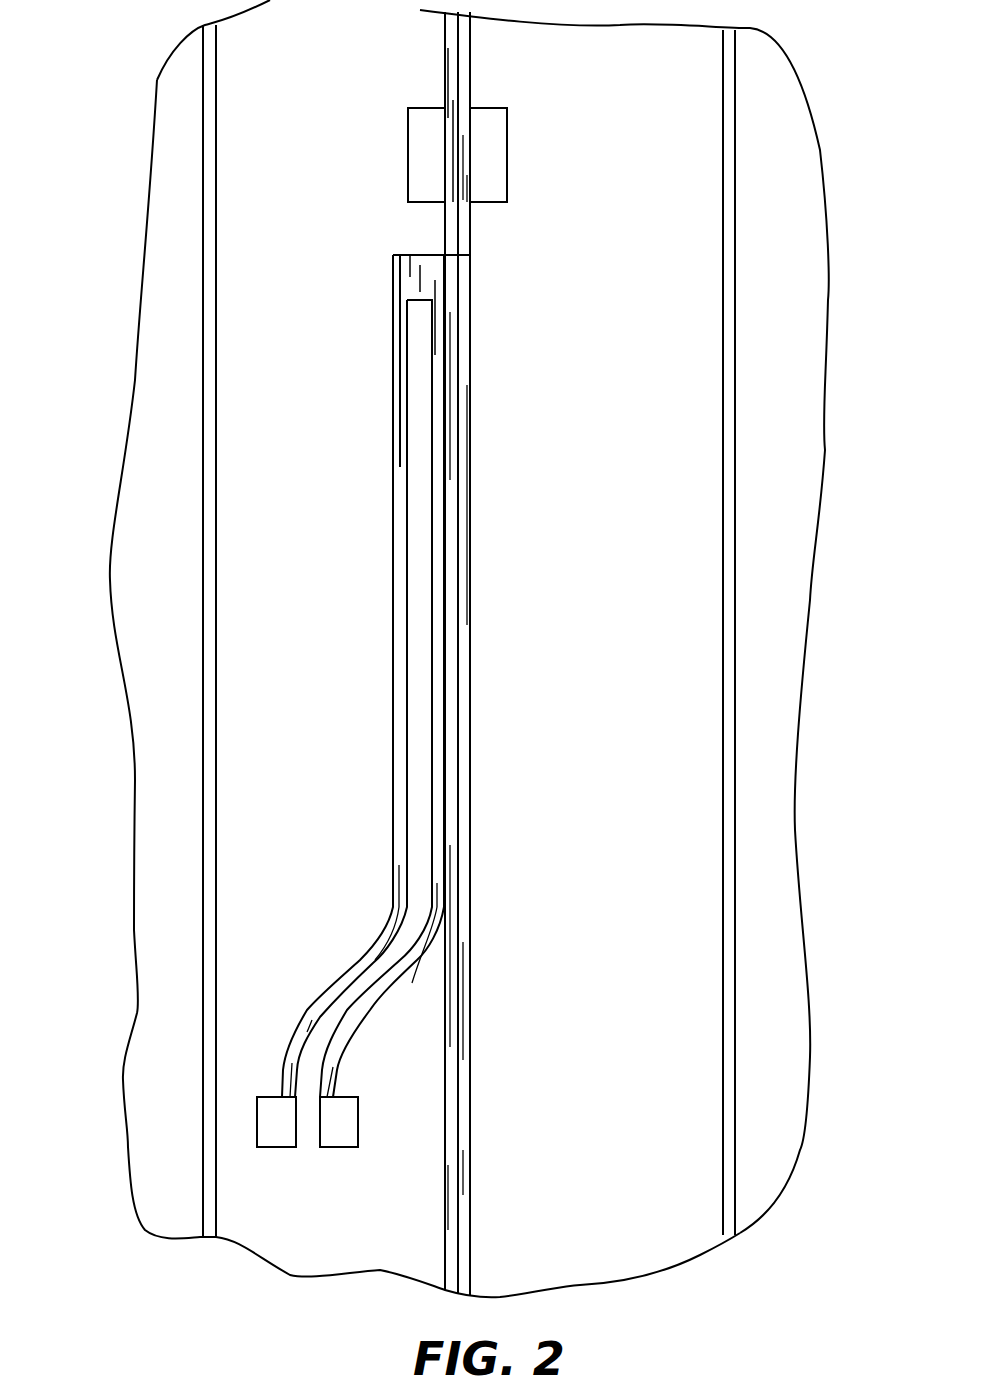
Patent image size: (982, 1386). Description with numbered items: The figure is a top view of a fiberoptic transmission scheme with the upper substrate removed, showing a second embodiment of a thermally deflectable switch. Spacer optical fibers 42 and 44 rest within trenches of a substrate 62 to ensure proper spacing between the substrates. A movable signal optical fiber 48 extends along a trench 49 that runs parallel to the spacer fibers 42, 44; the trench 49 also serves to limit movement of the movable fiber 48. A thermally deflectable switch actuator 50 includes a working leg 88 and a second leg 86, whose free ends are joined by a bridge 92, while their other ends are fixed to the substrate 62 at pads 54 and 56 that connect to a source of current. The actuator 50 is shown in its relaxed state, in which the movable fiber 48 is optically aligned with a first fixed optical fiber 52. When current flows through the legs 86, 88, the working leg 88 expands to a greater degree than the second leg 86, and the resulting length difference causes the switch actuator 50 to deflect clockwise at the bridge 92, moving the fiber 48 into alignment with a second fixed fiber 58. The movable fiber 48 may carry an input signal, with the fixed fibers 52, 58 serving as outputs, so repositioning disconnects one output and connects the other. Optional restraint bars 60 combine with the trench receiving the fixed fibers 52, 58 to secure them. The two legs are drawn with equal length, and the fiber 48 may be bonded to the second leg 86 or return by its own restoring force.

The spacer optical fiber 42 is at (207, 842).
The spacer optical fiber 44 is at (728, 1042).
The movable signal optical fiber 48 is at (450, 987).
The trench 49 is at (463, 912).
The thermally deflectable switch actuator 50 is at (260, 783).
The first fixed optical fiber 52 is at (445, 85).
The pad 54 is at (280, 1138).
The pad 56 is at (347, 1138).
The second fixed optical fiber 58 is at (467, 93).
The restraint bar 60 is at (422, 162).
The substrate 62 is at (780, 790).
The second leg 86 is at (438, 708).
The working leg 88 is at (400, 598).
The bridge 92 is at (408, 285).